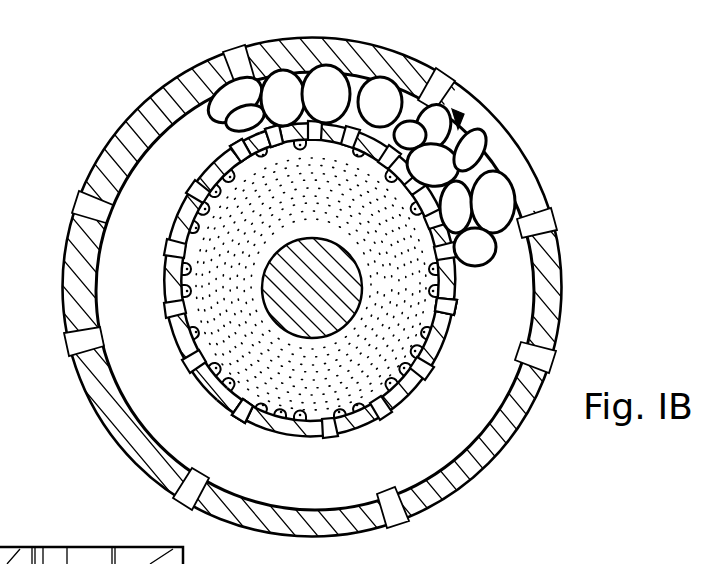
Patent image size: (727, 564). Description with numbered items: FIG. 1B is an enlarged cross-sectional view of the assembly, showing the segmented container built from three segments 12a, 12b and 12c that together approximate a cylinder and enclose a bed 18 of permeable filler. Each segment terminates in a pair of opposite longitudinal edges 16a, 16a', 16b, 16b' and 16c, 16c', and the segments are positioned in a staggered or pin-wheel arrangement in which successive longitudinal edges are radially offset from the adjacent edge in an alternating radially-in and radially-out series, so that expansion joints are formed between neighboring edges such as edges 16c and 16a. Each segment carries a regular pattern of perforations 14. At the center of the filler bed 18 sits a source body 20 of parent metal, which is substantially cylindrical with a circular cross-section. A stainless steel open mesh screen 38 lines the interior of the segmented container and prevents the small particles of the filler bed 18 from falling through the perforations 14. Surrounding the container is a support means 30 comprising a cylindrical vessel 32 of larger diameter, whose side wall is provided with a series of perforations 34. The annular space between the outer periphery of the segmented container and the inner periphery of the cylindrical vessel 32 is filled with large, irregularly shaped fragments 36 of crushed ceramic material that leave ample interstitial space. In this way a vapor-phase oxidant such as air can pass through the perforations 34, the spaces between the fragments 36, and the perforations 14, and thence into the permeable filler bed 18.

The segment 12a is at (428, 373).
The segment 12b is at (458, 170).
The segment 12c is at (177, 344).
The perforations 14 is at (393, 421).
The longitudinal edge 16a is at (259, 385).
The longitudinal edge 16b is at (199, 161).
The longitudinal edge 16c is at (245, 436).
The longitudinal edge 16a' is at (475, 325).
The longitudinal edge 16b' is at (418, 312).
The longitudinal edge 16c' is at (290, 166).
The bed of permeable filler 18 is at (335, 386).
The source body of parent metal 20 is at (288, 250).
The support means 30 is at (461, 116).
The cylindrical vessel 32 is at (549, 310).
The perforations 34 is at (234, 62).
The fragments of crushed ceramic material 36 is at (377, 100).
The open mesh screen 38 is at (207, 323).